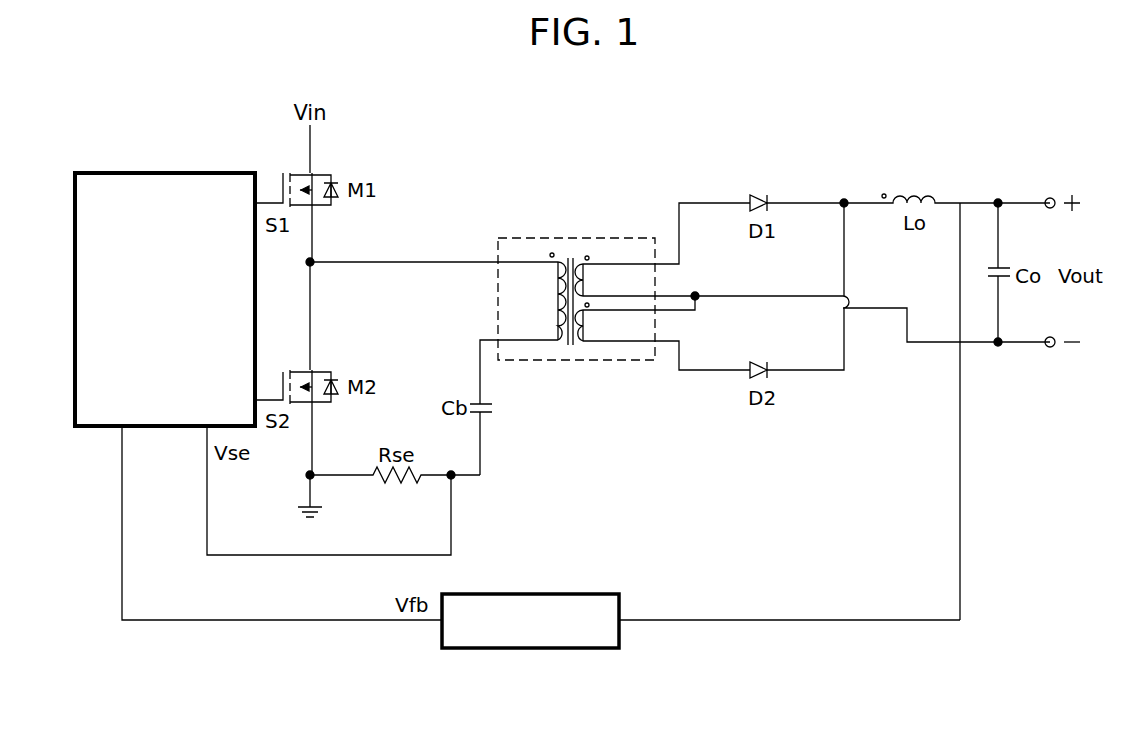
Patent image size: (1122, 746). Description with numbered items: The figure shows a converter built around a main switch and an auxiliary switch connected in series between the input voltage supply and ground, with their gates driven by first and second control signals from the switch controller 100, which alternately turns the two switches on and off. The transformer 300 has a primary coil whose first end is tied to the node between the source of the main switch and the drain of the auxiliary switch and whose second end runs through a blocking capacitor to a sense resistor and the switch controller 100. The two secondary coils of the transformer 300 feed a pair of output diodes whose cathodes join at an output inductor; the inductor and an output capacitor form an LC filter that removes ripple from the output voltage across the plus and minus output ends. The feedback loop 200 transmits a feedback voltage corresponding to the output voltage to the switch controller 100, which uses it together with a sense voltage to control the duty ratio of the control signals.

The switch controller 100 is at (180, 173).
The feedback loop 200 is at (565, 594).
The transformer 300 is at (570, 238).